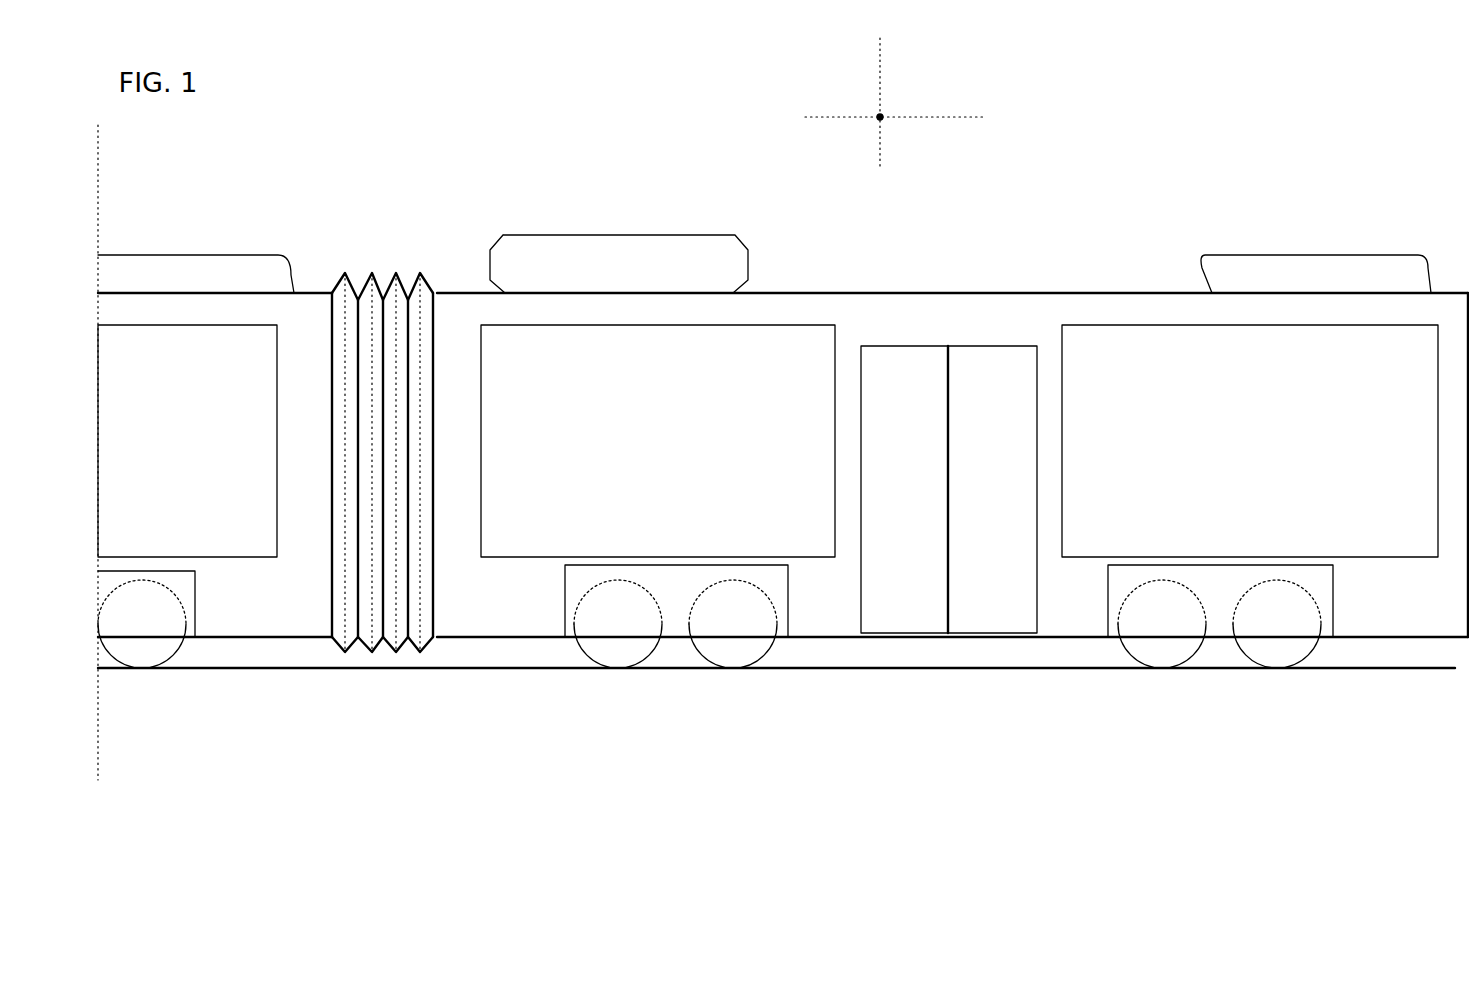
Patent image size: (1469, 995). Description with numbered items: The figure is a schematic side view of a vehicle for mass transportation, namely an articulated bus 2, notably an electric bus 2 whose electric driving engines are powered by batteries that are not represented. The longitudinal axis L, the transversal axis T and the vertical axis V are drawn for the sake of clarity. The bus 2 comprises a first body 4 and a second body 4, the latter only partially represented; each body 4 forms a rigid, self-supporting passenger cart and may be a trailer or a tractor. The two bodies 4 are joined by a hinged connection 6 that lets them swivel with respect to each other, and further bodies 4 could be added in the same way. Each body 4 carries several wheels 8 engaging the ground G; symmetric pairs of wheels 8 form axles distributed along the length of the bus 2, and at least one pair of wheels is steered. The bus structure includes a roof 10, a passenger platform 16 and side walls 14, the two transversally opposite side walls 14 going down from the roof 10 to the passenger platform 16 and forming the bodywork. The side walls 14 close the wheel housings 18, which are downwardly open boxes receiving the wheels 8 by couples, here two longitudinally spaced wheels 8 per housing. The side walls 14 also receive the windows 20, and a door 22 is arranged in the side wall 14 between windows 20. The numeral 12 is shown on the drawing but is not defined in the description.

The bus 2 is at (662, 116).
The body 4 is at (268, 214).
The hinged connection 6 is at (381, 646).
The wheel 8 is at (146, 653).
The roof 10 is at (1013, 292).
The underframe / floor 12 is at (270, 638).
The side wall 14 is at (582, 473).
The passenger platform 16 is at (226, 644).
The wheel housing 18 is at (190, 598).
The window 20 is at (768, 441).
The door 22 is at (949, 489).
The ground G is at (826, 672).
The transversal axis T is at (877, 114).
The vertical axis V is at (882, 75).
The longitudinal axis L is at (826, 117).